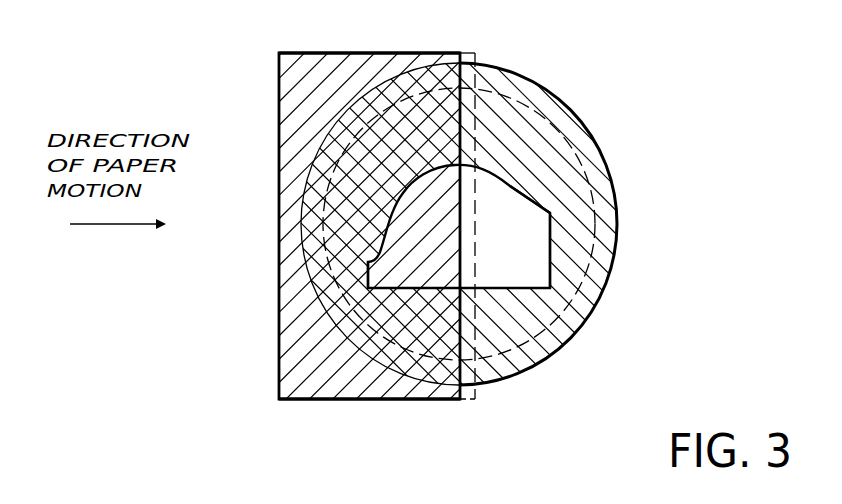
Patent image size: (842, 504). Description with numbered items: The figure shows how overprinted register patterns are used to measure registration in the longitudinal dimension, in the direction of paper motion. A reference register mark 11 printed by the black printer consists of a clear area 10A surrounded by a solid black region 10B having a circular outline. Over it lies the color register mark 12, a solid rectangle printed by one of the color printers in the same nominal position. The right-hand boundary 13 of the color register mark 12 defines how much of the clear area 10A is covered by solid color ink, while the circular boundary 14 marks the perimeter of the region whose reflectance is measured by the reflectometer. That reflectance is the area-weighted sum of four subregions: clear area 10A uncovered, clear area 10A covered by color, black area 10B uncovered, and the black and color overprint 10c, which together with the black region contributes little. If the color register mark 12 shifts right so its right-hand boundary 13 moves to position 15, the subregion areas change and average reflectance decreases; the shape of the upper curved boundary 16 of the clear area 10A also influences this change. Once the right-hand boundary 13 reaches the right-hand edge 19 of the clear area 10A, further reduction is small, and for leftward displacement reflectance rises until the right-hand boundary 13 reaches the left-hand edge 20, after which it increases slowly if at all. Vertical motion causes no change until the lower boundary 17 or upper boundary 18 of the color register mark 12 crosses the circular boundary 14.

The clear area 10A is at (535, 253).
The solid region 10B is at (573, 201).
The black and color overprint 10c is at (402, 128).
The reference register mark 11 is at (574, 342).
The color register mark 12 is at (305, 47).
The right-hand boundary 13 is at (475, 53).
The circular boundary 14 is at (590, 140).
The position 15 is at (485, 48).
The upper curved boundary 16 is at (517, 190).
The lower boundary 17 is at (300, 400).
The upper boundary 18 is at (281, 52).
The right-hand edge 19 is at (575, 270).
The left-hand edge 20 is at (368, 273).